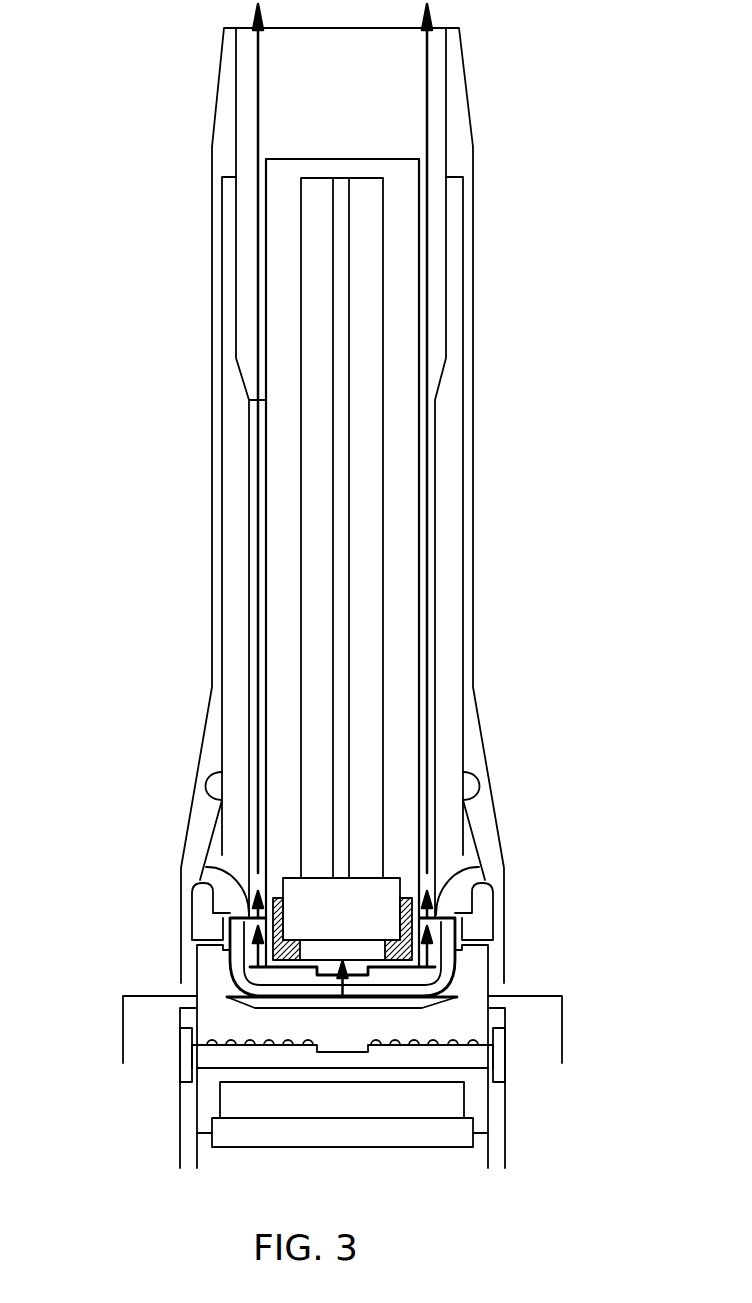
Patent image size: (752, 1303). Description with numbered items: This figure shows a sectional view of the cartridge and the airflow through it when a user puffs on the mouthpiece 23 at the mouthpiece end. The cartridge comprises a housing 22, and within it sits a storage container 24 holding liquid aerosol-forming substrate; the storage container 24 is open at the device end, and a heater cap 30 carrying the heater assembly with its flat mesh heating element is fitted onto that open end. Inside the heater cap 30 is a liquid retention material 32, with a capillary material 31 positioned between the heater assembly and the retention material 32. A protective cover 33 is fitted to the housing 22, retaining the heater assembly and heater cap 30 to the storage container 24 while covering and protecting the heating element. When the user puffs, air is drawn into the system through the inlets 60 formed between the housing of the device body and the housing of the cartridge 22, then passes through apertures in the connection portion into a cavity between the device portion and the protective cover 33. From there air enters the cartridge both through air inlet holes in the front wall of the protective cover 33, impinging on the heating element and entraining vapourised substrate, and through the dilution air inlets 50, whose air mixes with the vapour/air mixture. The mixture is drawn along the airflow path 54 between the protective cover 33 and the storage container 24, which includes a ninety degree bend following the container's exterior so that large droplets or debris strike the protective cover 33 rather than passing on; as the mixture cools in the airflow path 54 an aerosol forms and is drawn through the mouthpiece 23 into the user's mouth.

The housing 22 is at (472, 287).
The mouthpiece 23 is at (470, 86).
The storage container 24 is at (408, 553).
The heater cap 30 is at (272, 935).
The capillary material 31 is at (318, 950).
The liquid retention material 32 is at (317, 877).
The protective cover 33 is at (453, 625).
The dilution air inlets 50 is at (472, 867).
The airflow path 54 is at (428, 462).
The inlets 60 is at (500, 990).